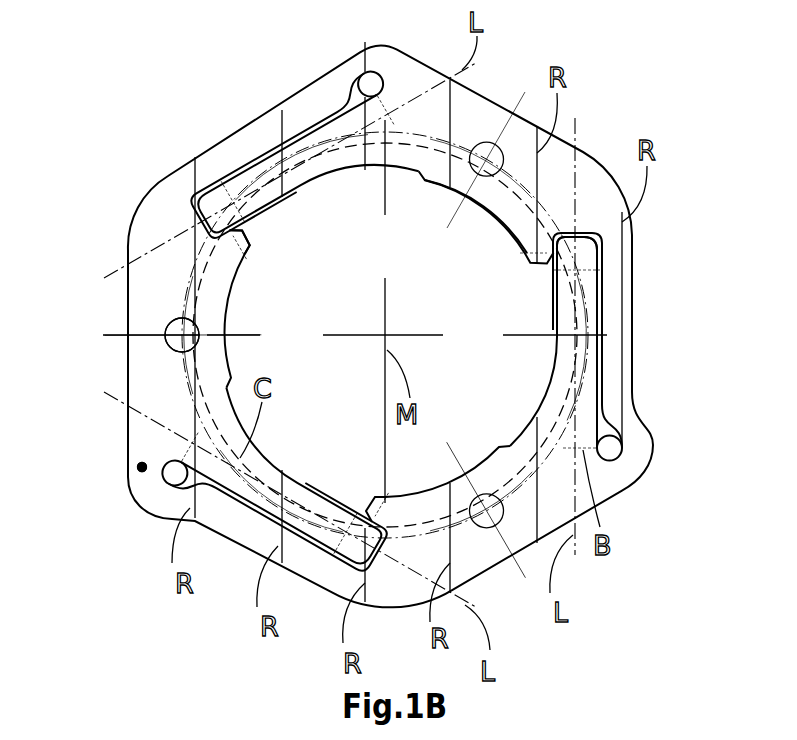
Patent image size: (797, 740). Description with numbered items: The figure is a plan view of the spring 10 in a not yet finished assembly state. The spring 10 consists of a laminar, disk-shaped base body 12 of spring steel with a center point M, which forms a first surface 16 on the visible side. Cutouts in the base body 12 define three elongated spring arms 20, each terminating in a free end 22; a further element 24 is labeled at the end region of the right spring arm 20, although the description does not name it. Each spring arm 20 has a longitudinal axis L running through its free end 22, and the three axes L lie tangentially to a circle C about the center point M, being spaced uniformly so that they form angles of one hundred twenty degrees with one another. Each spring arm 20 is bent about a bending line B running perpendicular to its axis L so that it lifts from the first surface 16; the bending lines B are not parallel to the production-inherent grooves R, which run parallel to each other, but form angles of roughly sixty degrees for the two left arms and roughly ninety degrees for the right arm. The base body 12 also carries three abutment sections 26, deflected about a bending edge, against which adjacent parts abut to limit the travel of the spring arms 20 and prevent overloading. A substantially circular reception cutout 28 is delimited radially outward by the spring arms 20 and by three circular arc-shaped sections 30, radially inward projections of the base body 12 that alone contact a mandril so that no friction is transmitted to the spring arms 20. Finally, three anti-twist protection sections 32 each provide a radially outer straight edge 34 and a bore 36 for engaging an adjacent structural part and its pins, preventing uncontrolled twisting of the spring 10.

The spring 10 is at (157, 77).
The base body 12 is at (142, 467).
The first surface 16 is at (142, 467).
The spring arms 20 is at (312, 170).
The free end 22 is at (580, 233).
The tongue free end 24 is at (585, 258).
The abutment sections 26 is at (253, 240).
The reception cutout 28 is at (497, 401).
The circular arc-shaped sections 30 is at (478, 203).
The anti-twist protection sections 32 is at (163, 363).
The straight edge 34 is at (128, 305).
The bore 36 is at (168, 338).